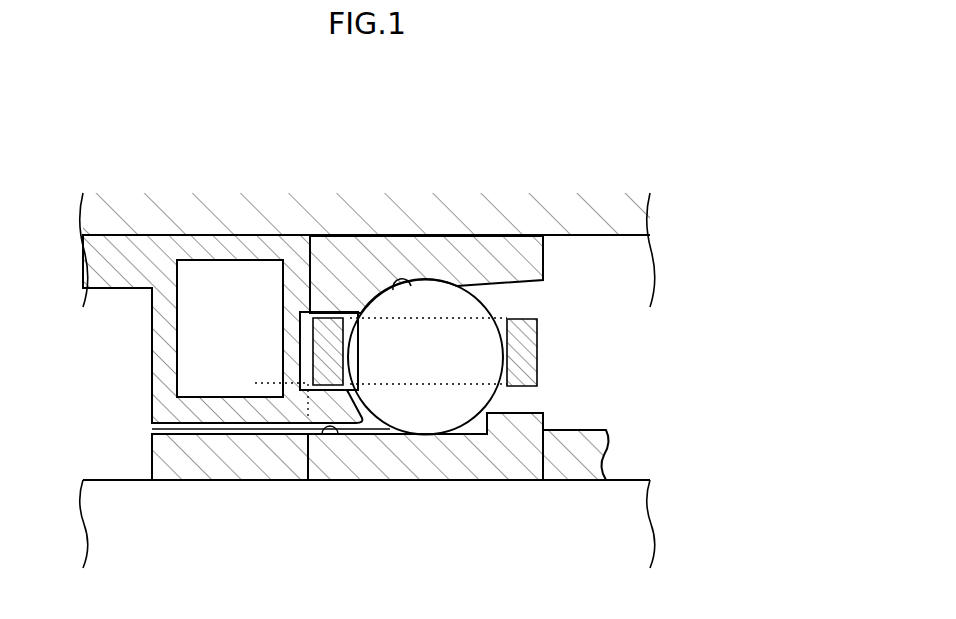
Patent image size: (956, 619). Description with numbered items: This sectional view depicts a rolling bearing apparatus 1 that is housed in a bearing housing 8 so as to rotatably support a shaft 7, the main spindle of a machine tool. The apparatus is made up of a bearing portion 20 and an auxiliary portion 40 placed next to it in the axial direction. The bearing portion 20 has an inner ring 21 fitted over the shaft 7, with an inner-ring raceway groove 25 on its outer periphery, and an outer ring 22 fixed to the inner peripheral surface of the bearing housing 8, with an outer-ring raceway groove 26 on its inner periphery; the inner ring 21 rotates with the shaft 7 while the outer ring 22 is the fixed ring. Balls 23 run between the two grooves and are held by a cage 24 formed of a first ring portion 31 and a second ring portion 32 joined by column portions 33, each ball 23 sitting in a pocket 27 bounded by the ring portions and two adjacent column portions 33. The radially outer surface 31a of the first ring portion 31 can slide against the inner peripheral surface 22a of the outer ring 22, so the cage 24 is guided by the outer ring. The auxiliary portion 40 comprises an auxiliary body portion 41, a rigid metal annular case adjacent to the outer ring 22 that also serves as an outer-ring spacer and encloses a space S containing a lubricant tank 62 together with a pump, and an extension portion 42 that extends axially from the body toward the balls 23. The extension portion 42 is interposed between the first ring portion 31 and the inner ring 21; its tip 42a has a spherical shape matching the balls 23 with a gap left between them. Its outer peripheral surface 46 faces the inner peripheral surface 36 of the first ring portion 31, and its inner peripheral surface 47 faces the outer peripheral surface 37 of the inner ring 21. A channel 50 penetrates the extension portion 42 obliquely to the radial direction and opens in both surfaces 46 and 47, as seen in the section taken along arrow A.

The rolling bearing apparatus 1 is at (553, 260).
The shaft 7 is at (102, 478).
The bearing housing 8 is at (103, 247).
The bearing portion 20 is at (492, 234).
The inner ring 21 is at (503, 467).
The outer ring 22 is at (434, 290).
The inner peripheral surface of the outer ring 22a is at (358, 326).
The ball 23 is at (455, 285).
The cage 24 is at (335, 311).
The inner-ring raceway groove 25 is at (455, 420).
The outer-ring raceway groove 26 is at (398, 288).
The pocket 27 is at (480, 353).
The first ring portion 31 is at (318, 337).
The radially outer surface of the first ring portion 31a is at (320, 322).
The second ring portion 32 is at (538, 331).
The column portion 33 is at (476, 308).
The inner peripheral surface of the first ring portion 36 is at (360, 390).
The outer peripheral surface of the inner ring 37 is at (338, 433).
The auxiliary portion 40 is at (200, 233).
The auxiliary body portion 41 is at (160, 337).
The extension portion 42 is at (345, 425).
The tip of the extension portion 42a is at (362, 400).
The outer peripheral surface of the extension portion 46 is at (330, 392).
The inner peripheral surface of the extension portion 47 is at (320, 430).
The channel 50 is at (264, 394).
The tank 62 is at (241, 339).
The space S is at (197, 372).
The arrow A is at (329, 128).